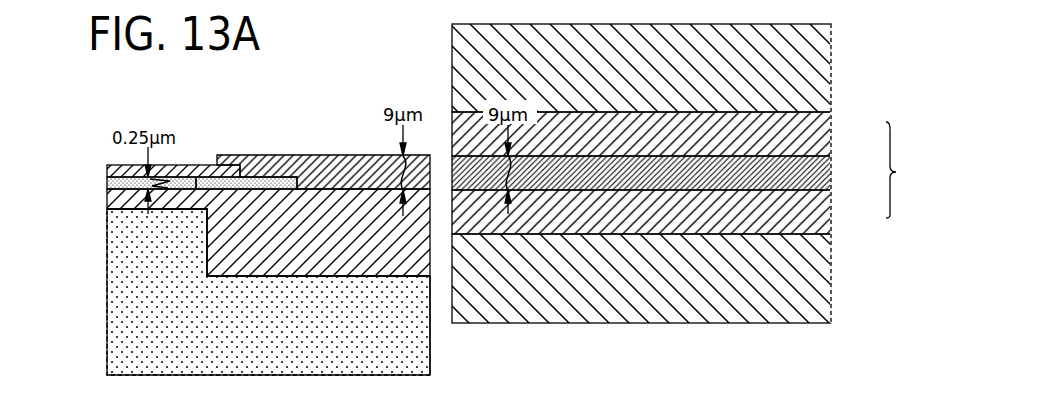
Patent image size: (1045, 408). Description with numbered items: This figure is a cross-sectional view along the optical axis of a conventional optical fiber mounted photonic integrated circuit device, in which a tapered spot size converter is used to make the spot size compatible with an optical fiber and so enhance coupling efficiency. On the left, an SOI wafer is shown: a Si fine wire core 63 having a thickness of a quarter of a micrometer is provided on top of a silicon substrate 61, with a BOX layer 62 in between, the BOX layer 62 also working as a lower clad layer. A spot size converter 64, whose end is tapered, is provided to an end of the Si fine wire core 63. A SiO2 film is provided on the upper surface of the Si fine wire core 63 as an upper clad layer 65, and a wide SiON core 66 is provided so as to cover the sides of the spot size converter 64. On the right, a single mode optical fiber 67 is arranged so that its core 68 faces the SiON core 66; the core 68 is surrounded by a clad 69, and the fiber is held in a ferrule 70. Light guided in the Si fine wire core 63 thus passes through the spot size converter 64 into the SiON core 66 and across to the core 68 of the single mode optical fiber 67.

The silicon substrate 61 is at (107, 327).
The BOX layer 62 is at (107, 201).
The Si fine wire core 63 is at (107, 183).
The spot size converter 64 is at (252, 182).
The upper clad layer 65 is at (107, 170).
The SiON core 66 is at (323, 156).
The single mode optical fiber 67 is at (907, 170).
The core 68 is at (831, 172).
The clad 69 is at (831, 137).
The ferrule 70 is at (831, 53).